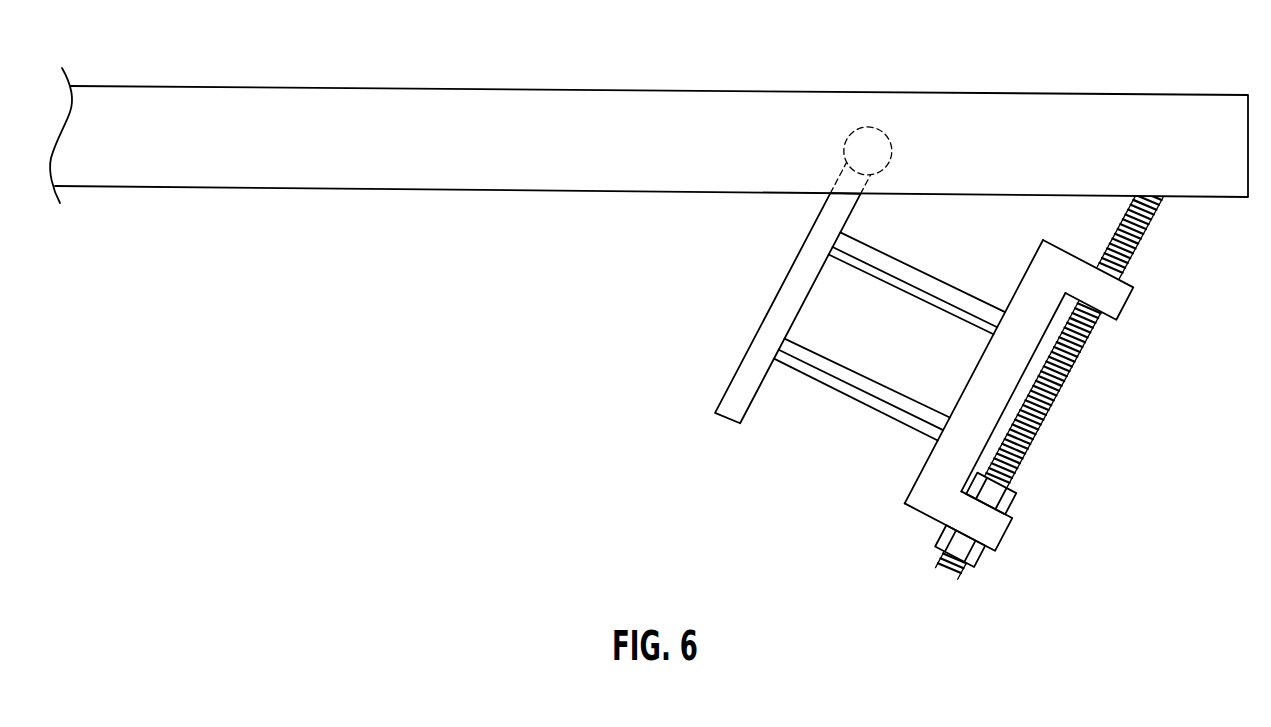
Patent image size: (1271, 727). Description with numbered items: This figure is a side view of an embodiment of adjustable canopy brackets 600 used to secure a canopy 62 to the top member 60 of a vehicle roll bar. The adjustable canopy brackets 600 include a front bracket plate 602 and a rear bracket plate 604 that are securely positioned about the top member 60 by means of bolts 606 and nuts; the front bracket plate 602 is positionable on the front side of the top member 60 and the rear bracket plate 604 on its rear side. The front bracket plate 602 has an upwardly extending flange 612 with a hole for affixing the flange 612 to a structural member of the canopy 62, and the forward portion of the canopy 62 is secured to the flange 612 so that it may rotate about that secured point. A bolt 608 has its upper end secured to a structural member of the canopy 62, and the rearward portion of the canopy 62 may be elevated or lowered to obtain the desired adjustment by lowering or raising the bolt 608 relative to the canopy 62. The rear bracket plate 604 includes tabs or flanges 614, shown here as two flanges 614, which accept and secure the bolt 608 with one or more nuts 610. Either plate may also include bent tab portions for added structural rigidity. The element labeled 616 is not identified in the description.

The adjustable canopy brackets 600 is at (1068, 44).
The canopy 62 is at (480, 89).
The top member 60 is at (900, 357).
The front bracket plate 602 is at (772, 303).
The rear bracket plate 604 is at (1054, 405).
The bolts 606 is at (920, 272).
The bolt 608 is at (1142, 247).
The nuts 610 is at (1012, 502).
The flange 612 is at (818, 212).
The flanges 614 is at (1128, 298).
The lower jaw 616 is at (1002, 532).